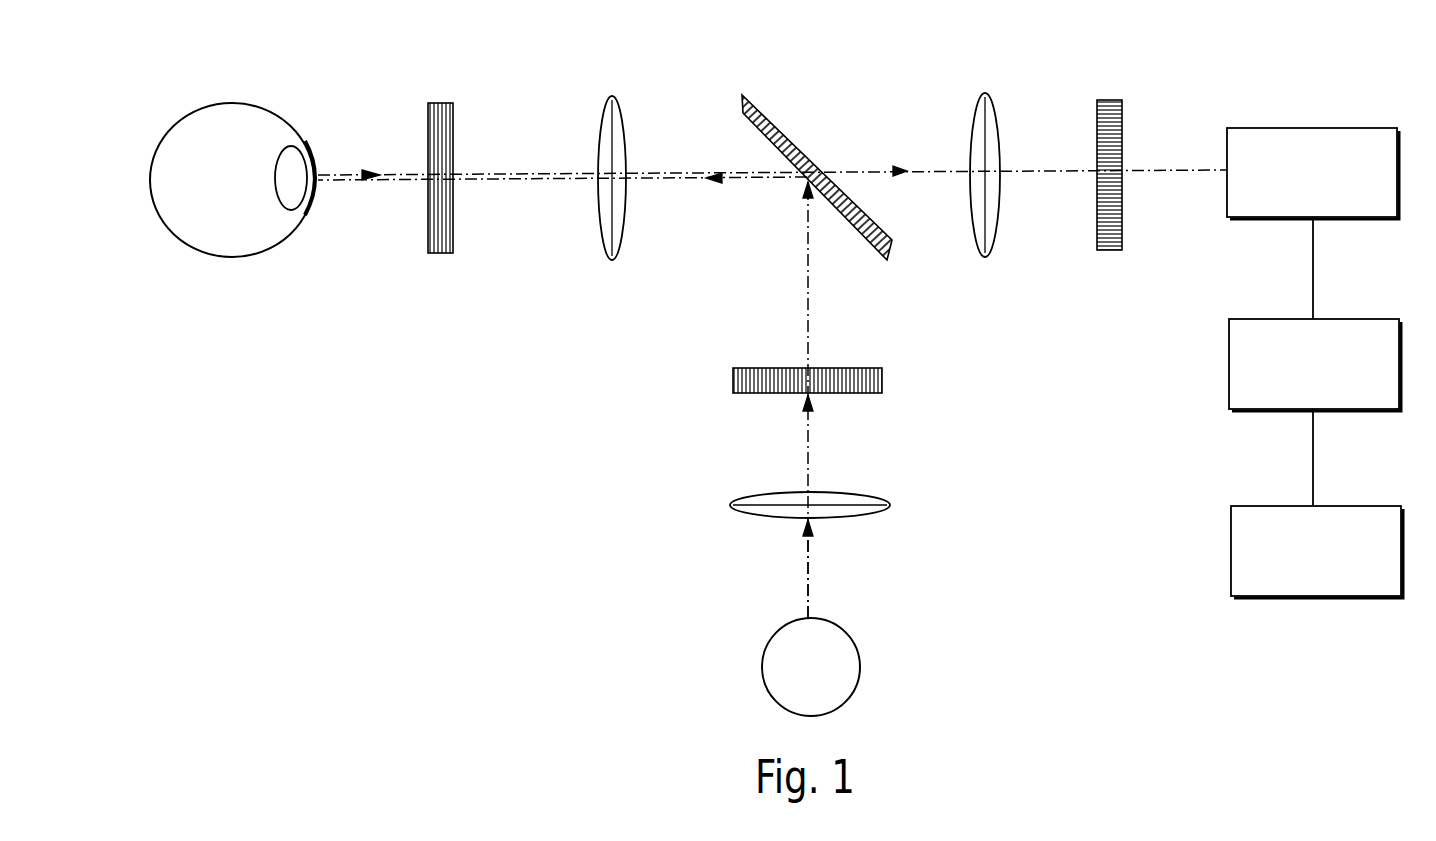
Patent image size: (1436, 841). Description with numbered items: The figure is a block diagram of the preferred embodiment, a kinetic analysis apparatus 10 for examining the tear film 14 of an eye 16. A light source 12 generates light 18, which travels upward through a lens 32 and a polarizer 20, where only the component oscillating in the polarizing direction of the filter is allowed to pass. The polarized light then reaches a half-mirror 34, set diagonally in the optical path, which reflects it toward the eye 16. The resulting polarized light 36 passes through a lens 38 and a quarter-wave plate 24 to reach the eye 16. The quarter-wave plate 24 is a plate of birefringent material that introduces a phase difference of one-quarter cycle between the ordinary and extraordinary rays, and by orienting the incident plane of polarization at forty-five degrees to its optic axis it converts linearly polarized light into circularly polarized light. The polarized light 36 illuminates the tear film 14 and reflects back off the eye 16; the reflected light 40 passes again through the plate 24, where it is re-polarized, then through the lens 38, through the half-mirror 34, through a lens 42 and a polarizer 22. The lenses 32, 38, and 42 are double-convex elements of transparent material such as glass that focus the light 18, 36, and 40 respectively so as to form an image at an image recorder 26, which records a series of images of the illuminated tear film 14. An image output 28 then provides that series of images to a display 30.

The kinetic analysis apparatus 10 is at (601, 352).
The light source 12 is at (826, 681).
The tear film 14 is at (312, 147).
The eye 16 is at (237, 190).
The light 18 is at (810, 575).
The polarizer 20 is at (882, 380).
The polarizer 22 is at (1110, 108).
The quarter-wave plate 24 is at (438, 112).
The image recorder 26 is at (1297, 187).
The image output 28 is at (1298, 378).
The display 30 is at (1300, 565).
The lens 32 is at (887, 503).
The half-mirror 34 is at (768, 117).
The polarized light 36 is at (520, 176).
The lens 38 is at (615, 115).
The reflected light 40 is at (350, 175).
The lens 42 is at (988, 108).